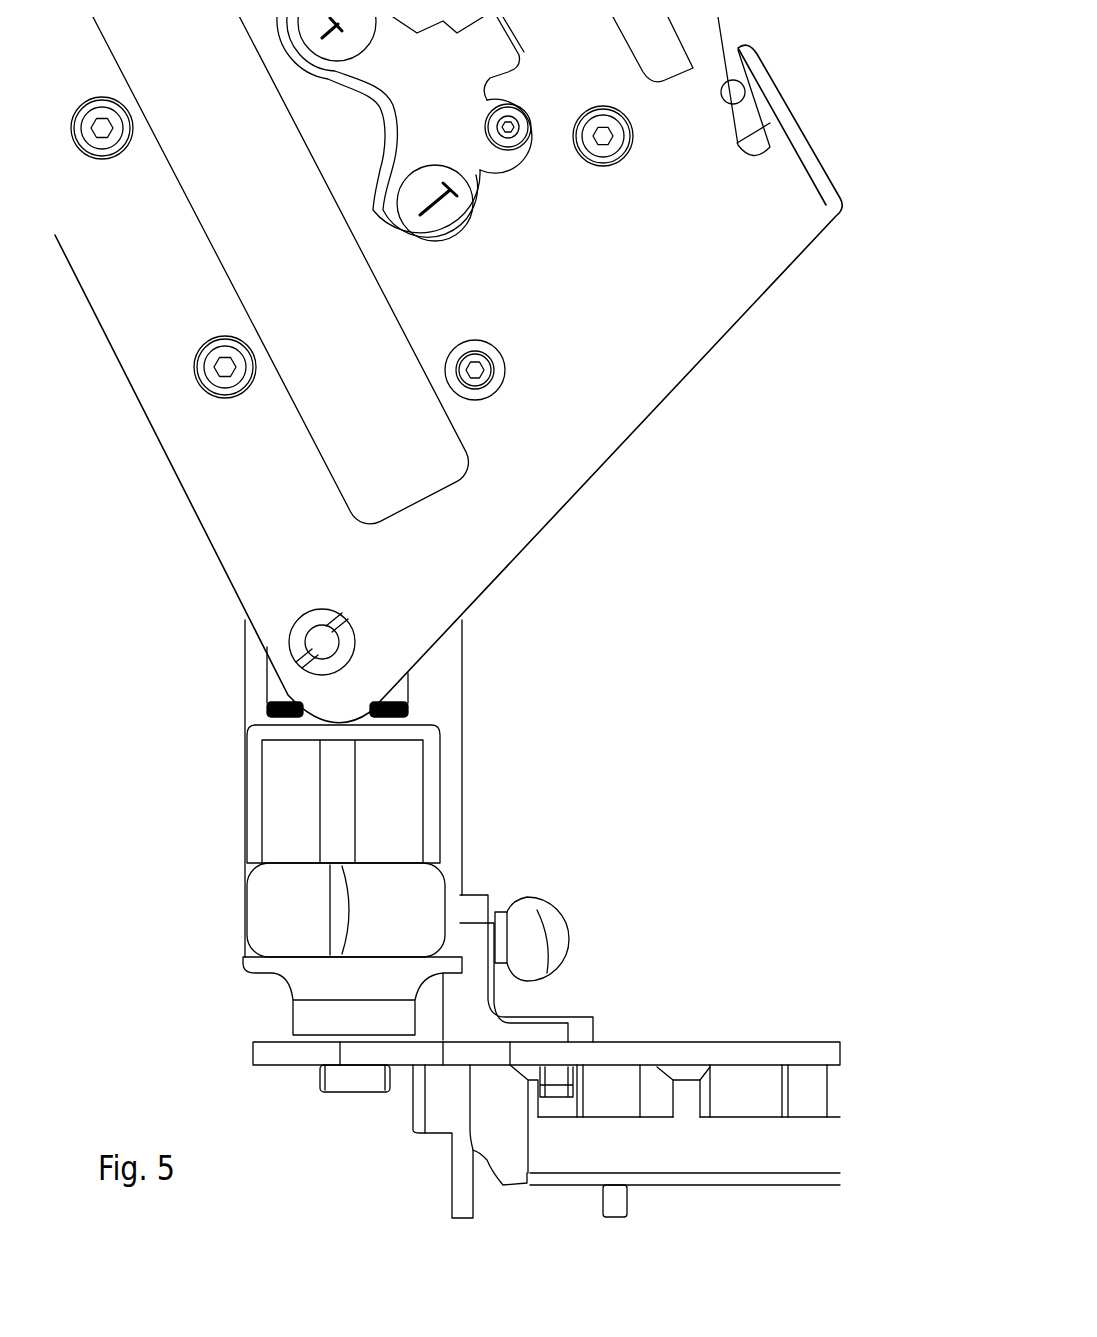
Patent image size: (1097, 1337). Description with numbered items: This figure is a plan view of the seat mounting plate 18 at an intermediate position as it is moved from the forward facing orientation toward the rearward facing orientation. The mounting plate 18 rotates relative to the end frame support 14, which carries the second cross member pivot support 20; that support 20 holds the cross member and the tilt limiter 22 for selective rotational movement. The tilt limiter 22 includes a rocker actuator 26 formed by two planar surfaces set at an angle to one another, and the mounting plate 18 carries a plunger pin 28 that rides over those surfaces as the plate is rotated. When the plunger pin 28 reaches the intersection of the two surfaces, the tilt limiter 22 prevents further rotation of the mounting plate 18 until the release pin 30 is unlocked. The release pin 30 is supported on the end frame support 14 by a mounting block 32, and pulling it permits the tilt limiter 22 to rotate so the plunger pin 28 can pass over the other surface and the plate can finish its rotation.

The end frame support 14 is at (287, 1058).
The seat mounting plate 18 is at (223, 470).
The second cross member pivot support 20 is at (293, 1013).
The tilt limiter 22 is at (450, 690).
The rocker actuator 26 is at (278, 690).
The plunger pin 28 is at (312, 614).
The release pin 30 is at (522, 922).
The mounting block 32 is at (473, 910).